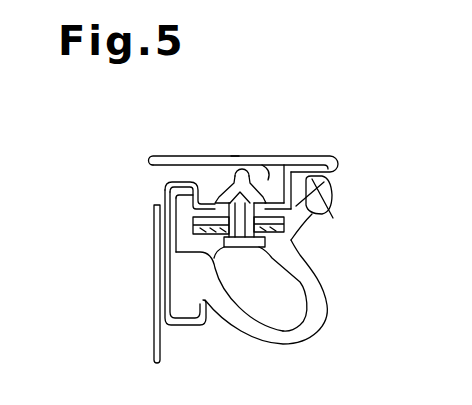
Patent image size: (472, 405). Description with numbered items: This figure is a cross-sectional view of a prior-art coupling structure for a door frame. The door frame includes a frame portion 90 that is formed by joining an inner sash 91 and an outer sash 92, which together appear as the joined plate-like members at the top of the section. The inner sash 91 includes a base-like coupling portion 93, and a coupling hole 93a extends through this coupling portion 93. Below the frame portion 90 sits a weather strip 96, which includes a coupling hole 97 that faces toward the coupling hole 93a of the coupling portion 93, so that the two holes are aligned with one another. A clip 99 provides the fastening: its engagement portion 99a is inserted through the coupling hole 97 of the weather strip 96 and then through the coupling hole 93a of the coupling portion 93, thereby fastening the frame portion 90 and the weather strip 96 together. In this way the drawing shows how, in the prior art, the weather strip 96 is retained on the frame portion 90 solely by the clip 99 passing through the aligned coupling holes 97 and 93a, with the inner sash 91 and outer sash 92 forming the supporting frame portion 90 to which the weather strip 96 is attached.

The frame portion 90 is at (239, 127).
The inner sash 91 is at (160, 156).
The outer sash 92 is at (192, 156).
The coupling portion 93 is at (328, 200).
The coupling hole 93a is at (235, 156).
The weather strip 96 is at (328, 310).
The coupling hole 97 is at (236, 248).
The clip 99 is at (289, 245).
The engagement portion 99a is at (262, 156).